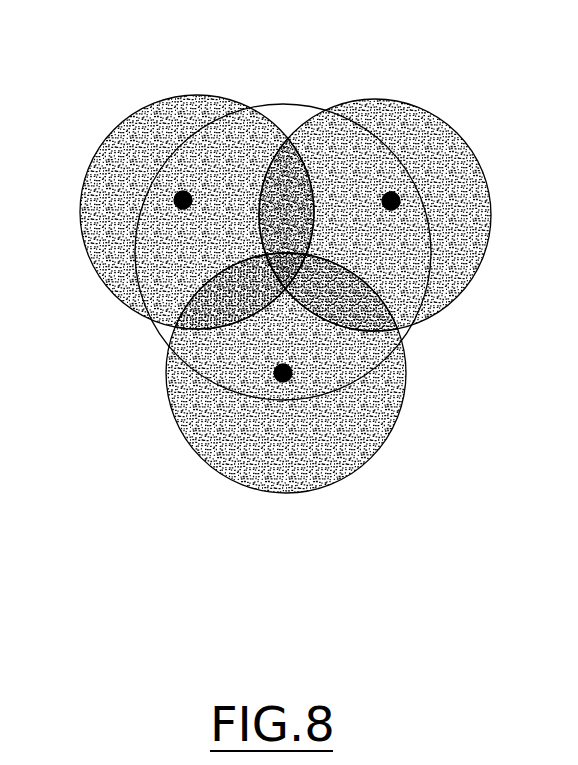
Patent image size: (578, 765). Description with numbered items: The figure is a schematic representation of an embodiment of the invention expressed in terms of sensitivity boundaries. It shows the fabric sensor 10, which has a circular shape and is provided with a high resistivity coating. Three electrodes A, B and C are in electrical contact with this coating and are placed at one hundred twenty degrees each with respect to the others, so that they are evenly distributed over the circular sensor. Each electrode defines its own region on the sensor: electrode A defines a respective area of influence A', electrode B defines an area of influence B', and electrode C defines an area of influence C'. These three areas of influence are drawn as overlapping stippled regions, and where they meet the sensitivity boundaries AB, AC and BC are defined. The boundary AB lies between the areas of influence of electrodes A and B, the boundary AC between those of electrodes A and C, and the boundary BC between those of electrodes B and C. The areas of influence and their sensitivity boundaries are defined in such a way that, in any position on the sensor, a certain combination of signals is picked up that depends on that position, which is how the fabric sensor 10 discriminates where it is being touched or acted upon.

The fabric sensor 10 is at (245, 75).
The electrode A is at (146, 136).
The electrode B is at (409, 134).
The electrode C is at (355, 424).
The area of influence A' is at (166, 212).
The area of influence B' is at (408, 215).
The area of influence C' is at (248, 373).
The sensitivity boundary AB is at (292, 122).
The sensitivity boundary AC is at (160, 338).
The sensitivity boundary BC is at (410, 311).